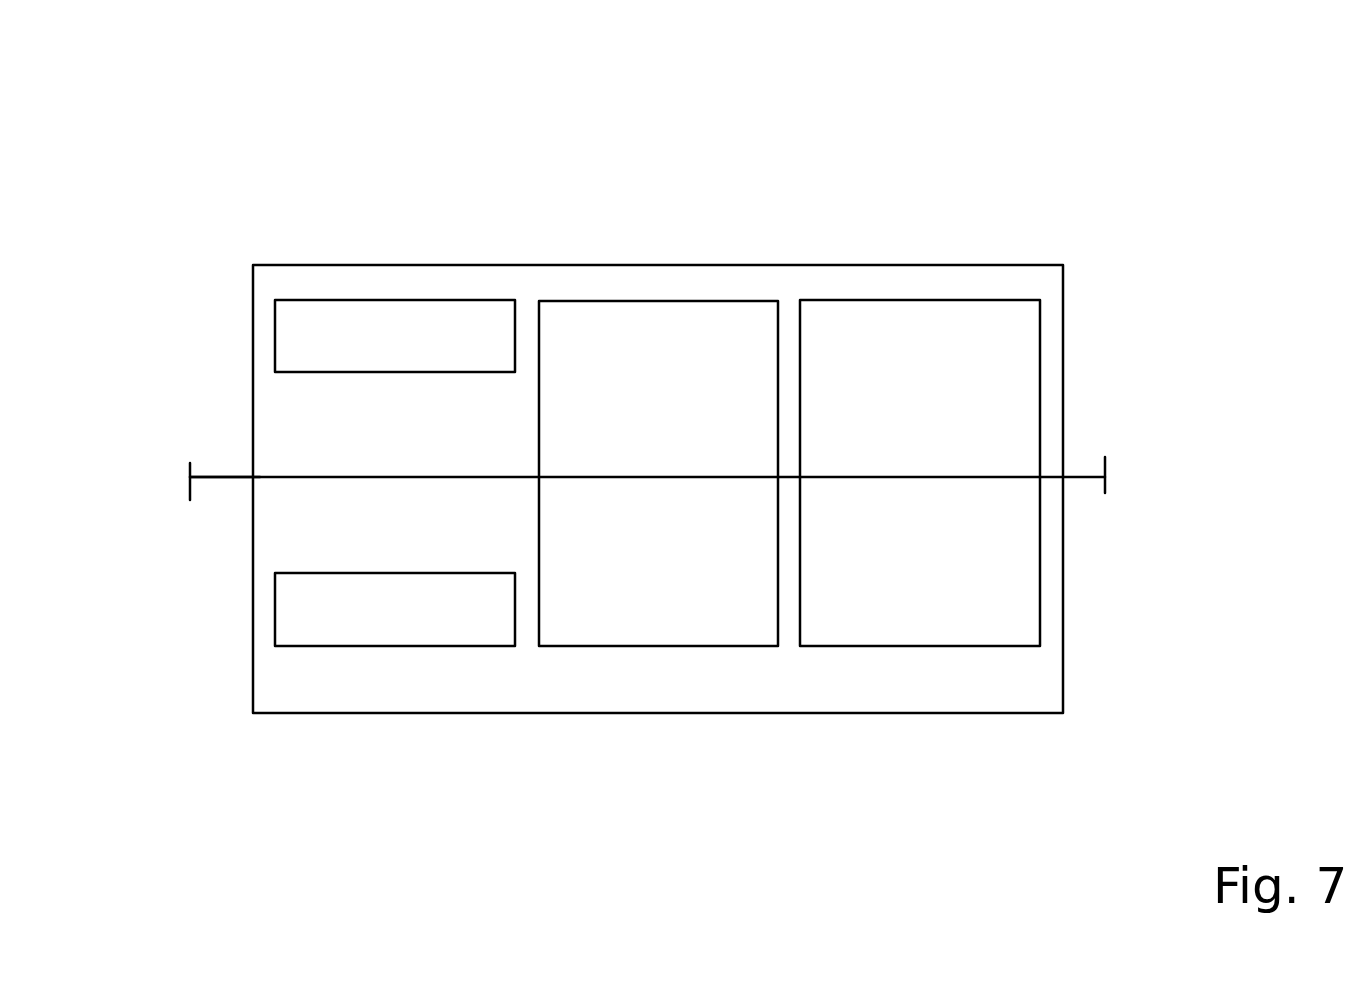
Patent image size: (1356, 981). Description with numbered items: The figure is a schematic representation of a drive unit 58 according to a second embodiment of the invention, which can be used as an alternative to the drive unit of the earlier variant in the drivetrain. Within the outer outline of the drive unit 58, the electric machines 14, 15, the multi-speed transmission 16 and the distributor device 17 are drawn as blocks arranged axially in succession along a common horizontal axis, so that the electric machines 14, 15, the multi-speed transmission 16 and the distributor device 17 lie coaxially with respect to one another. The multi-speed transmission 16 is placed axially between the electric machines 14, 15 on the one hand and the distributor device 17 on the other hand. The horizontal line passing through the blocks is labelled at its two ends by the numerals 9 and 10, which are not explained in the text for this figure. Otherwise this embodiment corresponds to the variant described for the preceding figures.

The drive unit 58 is at (209, 143).
The electric machine 14 is at (355, 320).
The electric machine 15 is at (395, 344).
The multi-speed transmission 16 is at (657, 337).
The distributor device 17 is at (924, 320).
The axis 9 is at (1105, 457).
The axis end 10 is at (190, 500).